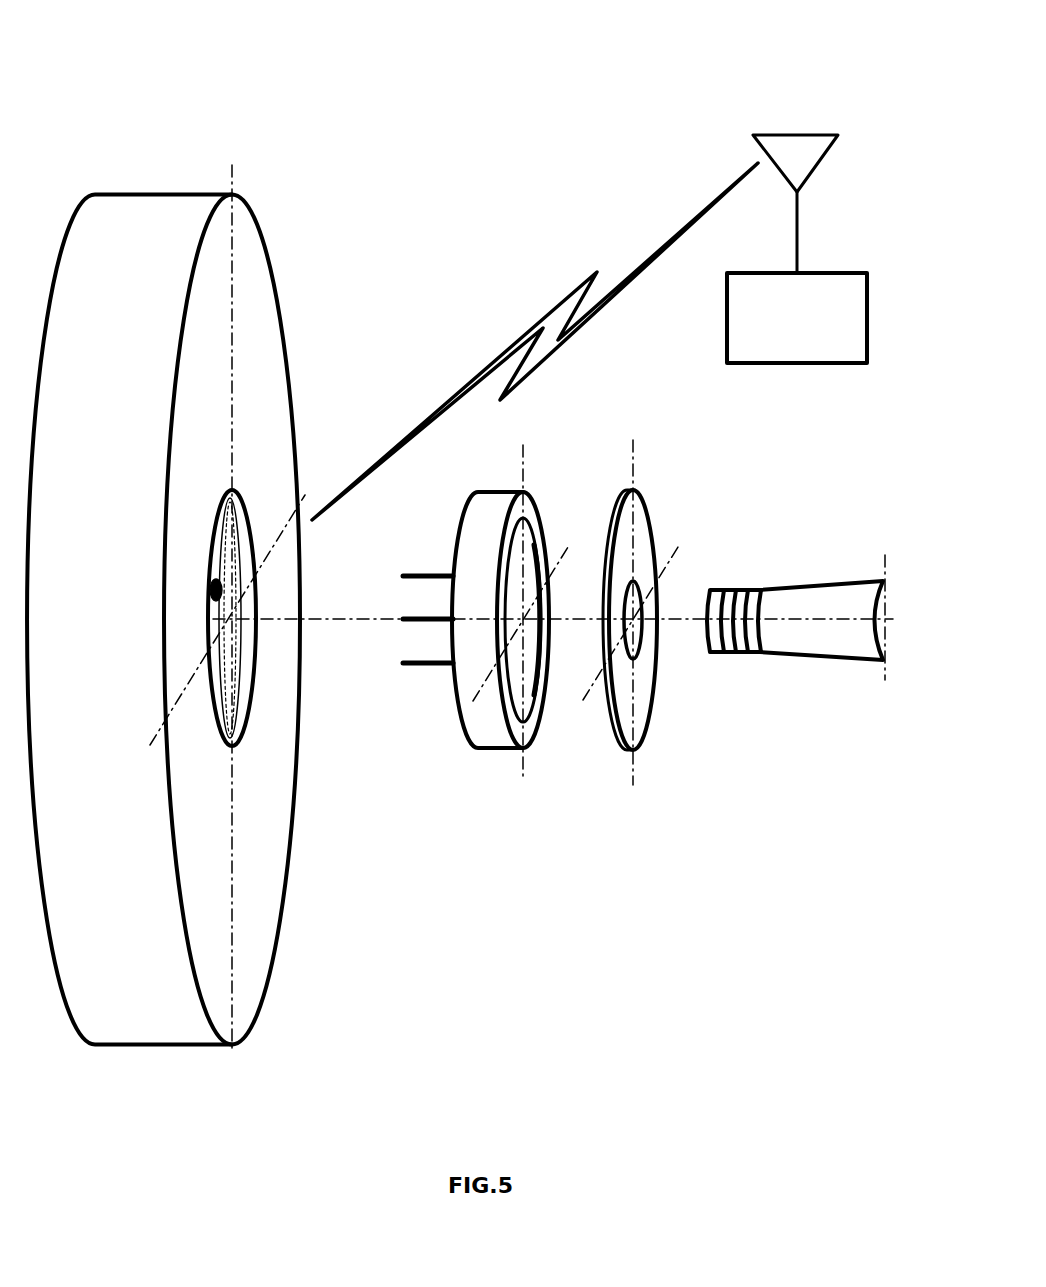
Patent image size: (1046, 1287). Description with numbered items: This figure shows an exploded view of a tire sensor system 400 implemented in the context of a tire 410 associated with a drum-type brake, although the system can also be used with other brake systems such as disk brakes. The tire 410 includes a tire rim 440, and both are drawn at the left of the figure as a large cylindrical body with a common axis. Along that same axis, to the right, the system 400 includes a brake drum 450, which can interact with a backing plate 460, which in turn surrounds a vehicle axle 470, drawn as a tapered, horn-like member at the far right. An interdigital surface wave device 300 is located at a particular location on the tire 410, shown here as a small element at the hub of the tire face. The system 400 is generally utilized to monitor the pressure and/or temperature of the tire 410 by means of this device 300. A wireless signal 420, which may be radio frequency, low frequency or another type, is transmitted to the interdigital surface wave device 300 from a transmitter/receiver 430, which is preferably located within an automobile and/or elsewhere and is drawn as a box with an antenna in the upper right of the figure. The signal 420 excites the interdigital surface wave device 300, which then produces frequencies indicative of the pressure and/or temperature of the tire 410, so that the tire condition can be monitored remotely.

The interdigital surface wave device 300 is at (210, 590).
The tire sensor system 400 is at (696, 82).
The tire 410 is at (255, 233).
The wireless signal 420 is at (502, 353).
The transmitter/receiver 430 is at (817, 332).
The tire rim 440 is at (306, 865).
The brake drum 450 is at (438, 738).
The backing plate 460 is at (608, 722).
The vehicle axle 470 is at (825, 658).